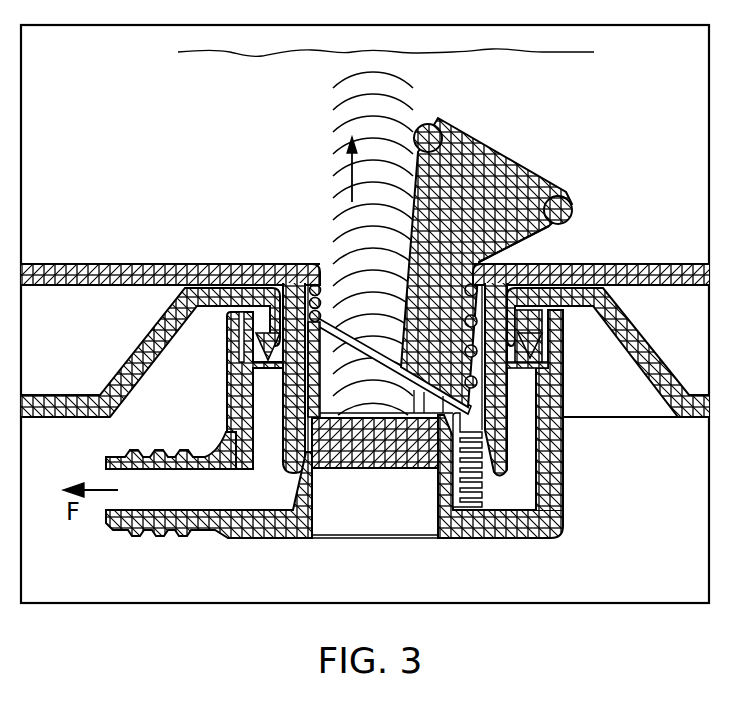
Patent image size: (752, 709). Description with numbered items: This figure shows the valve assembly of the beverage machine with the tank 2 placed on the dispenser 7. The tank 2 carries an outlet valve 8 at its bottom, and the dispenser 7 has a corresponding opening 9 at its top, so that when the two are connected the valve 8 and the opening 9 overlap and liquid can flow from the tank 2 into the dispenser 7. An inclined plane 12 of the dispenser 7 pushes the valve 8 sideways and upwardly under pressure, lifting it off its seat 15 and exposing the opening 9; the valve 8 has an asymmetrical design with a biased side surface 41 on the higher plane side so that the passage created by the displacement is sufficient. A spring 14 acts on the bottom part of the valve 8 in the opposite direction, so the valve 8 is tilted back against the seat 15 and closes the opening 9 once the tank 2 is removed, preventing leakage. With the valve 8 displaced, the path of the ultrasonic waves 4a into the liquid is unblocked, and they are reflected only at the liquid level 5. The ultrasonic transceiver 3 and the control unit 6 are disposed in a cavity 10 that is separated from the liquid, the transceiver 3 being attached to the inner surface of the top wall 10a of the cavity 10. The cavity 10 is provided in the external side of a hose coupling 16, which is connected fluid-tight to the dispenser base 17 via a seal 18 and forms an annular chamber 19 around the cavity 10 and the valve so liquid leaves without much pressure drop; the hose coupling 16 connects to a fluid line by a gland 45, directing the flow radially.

The tank 2 is at (687, 342).
The ultrasonic transceiver 3 is at (375, 443).
The ultrasonic waves 4a is at (327, 182).
The liquid level 5 is at (646, 51).
The control unit 6 is at (395, 465).
The dispenser 7 is at (627, 495).
The outlet valve 8 is at (479, 222).
The opening 9 is at (380, 296).
The cavity 10 is at (364, 513).
The top wall 10a is at (333, 423).
The inclined plane 12 is at (400, 394).
The spring 14 is at (309, 290).
The seat 15 is at (320, 284).
The hose coupling 16 is at (549, 531).
The dispenser base 17 is at (690, 414).
The seal 18 is at (541, 334).
The annular chamber 19 is at (530, 450).
The biased side surface 41 is at (497, 222).
The gland 45 is at (190, 528).